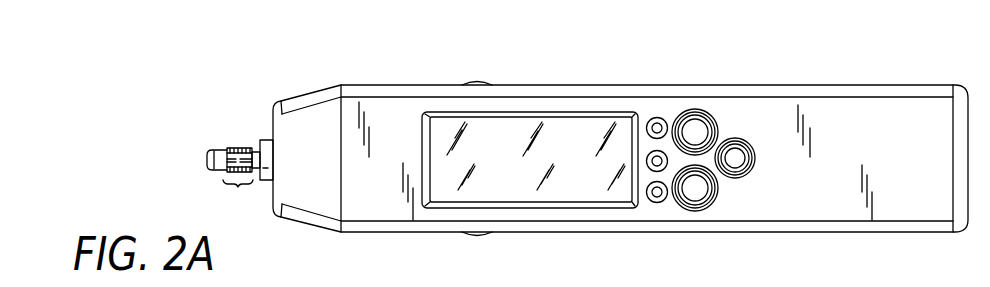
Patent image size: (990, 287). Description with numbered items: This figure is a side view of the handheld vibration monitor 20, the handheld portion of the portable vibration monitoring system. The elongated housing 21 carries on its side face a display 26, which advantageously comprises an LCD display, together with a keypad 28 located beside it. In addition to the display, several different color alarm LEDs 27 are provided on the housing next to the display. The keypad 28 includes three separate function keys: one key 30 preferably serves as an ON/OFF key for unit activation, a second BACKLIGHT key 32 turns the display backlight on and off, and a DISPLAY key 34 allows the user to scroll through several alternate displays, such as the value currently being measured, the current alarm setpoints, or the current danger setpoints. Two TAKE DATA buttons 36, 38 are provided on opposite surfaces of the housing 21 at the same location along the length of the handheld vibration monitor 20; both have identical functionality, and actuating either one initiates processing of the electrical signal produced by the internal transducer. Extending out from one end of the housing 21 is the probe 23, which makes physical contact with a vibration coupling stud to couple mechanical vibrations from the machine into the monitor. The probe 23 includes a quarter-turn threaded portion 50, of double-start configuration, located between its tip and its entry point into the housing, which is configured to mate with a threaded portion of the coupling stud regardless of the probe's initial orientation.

The handheld vibration monitor 20 is at (880, 52).
The housing 21 is at (300, 193).
The probe 23 is at (237, 148).
The display 26 is at (566, 183).
The alarm LEDs 27 is at (657, 128).
The keypad 28 is at (770, 197).
The ON/OFF key 30 is at (735, 158).
The BACKLIGHT key 32 is at (695, 132).
The DISPLAY key 34 is at (695, 188).
The TAKE DATA button 36 is at (477, 82).
The TAKE DATA button 38 is at (472, 237).
The threaded portion 50 is at (238, 195).